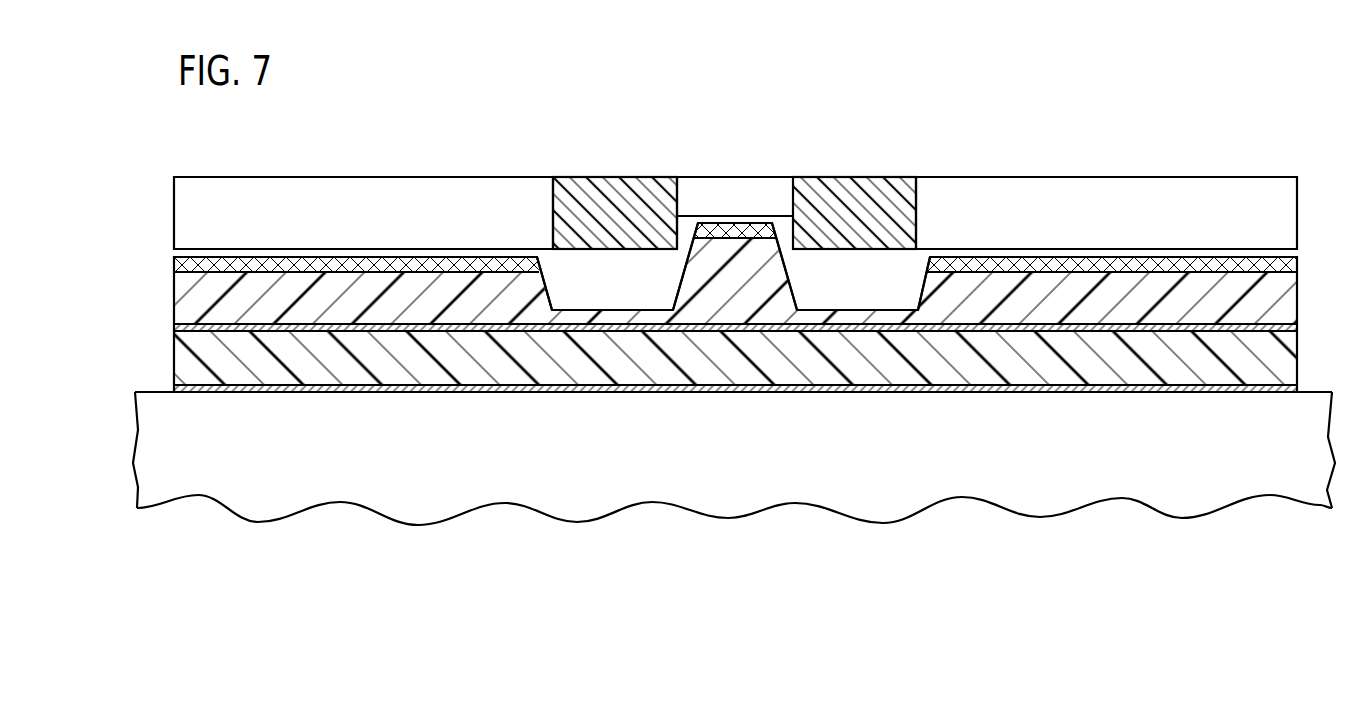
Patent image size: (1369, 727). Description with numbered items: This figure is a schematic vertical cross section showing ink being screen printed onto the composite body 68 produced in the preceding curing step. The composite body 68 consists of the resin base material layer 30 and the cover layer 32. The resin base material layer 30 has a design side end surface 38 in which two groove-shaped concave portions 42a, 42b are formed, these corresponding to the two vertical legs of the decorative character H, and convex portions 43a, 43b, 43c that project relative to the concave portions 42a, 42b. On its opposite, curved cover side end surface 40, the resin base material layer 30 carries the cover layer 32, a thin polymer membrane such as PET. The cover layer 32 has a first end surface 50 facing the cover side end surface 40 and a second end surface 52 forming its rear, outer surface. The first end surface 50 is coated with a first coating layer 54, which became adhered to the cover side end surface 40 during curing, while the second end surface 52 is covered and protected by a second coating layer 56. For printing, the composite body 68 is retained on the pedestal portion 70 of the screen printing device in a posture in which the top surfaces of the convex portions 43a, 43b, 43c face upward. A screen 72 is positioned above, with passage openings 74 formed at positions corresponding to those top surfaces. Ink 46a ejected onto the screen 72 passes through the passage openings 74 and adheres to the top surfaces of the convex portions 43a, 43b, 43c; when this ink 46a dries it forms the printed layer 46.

The resin base material layer 30 is at (1095, 303).
The cover layer 32 is at (1055, 372).
The design side end surface 38 is at (419, 272).
The cover side end surface 40 is at (383, 326).
The concave portion 42a is at (857, 308).
The concave portion 42b is at (620, 308).
The convex portion 43a is at (1052, 272).
The convex portion 43b is at (758, 260).
The convex portion 43c is at (262, 272).
The printed layer 46 is at (735, 191).
The ink 46a is at (473, 268).
The first end surface 50 is at (242, 330).
The second end surface 52 is at (323, 383).
The first coating layer 54 is at (1222, 330).
The second coating layer 56 is at (1263, 387).
The composite body 68 is at (1127, 433).
The pedestal portion 70 is at (1038, 507).
The screen 72 is at (853, 185).
The passage opening 74 is at (553, 193).